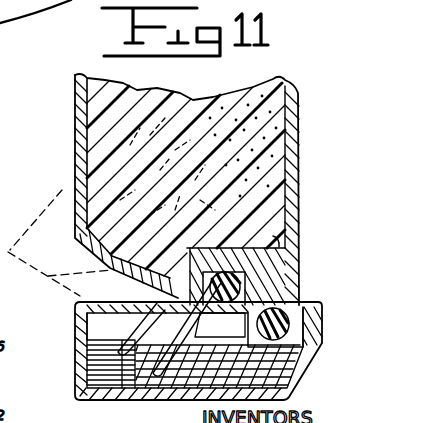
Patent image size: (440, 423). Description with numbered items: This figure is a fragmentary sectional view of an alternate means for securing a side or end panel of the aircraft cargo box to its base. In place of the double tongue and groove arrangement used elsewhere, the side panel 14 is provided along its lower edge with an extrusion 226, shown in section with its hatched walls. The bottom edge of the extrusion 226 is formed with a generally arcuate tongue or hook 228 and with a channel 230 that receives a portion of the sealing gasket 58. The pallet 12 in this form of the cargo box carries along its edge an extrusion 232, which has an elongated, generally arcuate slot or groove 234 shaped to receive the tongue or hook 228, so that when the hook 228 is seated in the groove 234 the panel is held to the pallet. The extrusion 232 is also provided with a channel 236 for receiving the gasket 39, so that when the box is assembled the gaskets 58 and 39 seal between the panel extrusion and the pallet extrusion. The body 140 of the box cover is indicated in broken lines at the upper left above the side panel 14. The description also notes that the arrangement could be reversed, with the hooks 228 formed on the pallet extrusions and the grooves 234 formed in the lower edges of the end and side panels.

The side 14 is at (50, 129).
The body 140 is at (56, 243).
The extrusion 226 is at (297, 175).
The channel 230 is at (243, 281).
The sealing gasket 58 is at (241, 300).
The sealing gasket 39 is at (297, 331).
The channel 236 is at (304, 351).
The extrusion 232 is at (288, 398).
The slot or groove 234 is at (145, 366).
The tongue or hook 228 is at (110, 352).
The pallet 12 is at (54, 378).